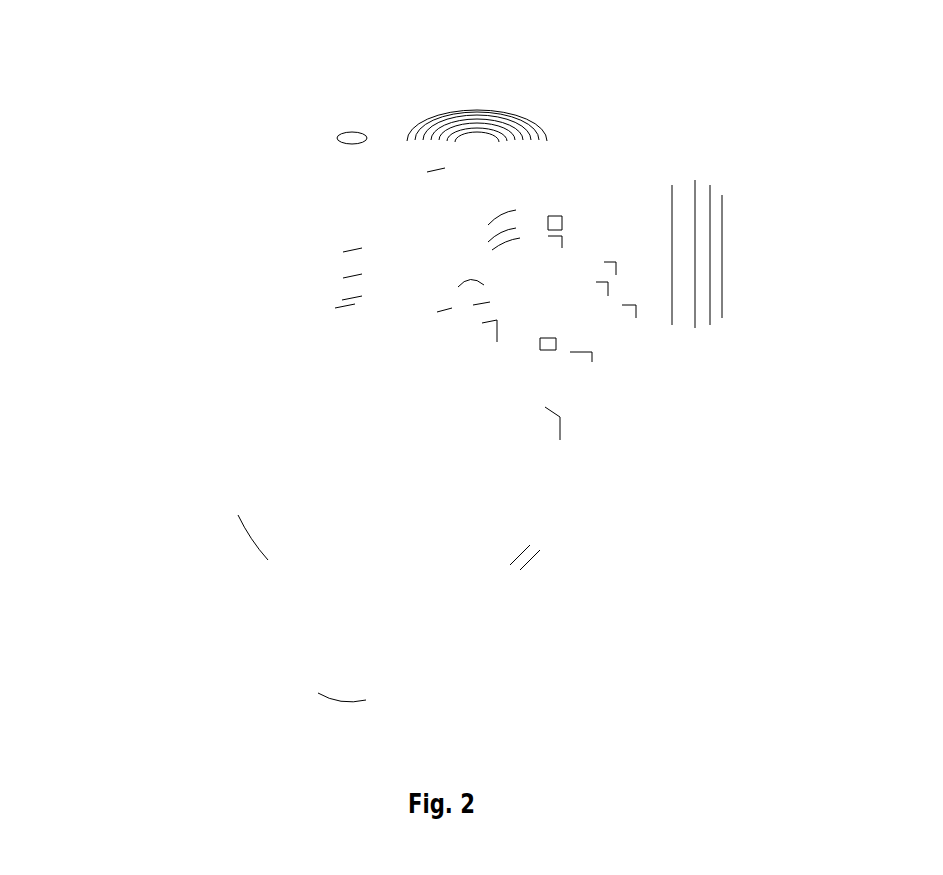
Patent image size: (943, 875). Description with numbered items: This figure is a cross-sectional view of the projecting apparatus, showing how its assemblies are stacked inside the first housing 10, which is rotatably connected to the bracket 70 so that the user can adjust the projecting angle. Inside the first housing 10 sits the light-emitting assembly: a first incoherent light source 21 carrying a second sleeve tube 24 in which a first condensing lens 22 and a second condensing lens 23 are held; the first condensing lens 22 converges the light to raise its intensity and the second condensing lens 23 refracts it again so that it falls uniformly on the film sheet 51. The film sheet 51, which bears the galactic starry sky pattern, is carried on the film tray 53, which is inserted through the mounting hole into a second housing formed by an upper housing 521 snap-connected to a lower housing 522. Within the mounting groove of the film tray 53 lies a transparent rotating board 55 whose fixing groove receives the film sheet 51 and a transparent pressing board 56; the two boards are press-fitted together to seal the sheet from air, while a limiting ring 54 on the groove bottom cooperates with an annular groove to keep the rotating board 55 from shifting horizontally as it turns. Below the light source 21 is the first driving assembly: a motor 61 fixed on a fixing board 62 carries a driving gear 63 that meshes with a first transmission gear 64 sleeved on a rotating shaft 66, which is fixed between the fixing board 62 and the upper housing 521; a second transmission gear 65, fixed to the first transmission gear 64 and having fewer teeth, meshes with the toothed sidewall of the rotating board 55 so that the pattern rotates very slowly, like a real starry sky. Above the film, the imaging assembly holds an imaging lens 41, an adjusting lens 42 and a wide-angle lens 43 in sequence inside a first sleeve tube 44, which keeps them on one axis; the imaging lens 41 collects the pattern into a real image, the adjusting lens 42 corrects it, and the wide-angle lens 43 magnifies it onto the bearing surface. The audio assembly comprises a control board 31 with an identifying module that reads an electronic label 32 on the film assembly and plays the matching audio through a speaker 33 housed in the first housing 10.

The first housing 10 is at (260, 537).
The first incoherent light source 21 is at (482, 323).
The first condensing lens 22 is at (473, 305).
The second condensing lens 23 is at (460, 285).
The second sleeve tube 24 is at (437, 312).
The control board 31 is at (335, 308).
The electronic label 32 is at (496, 246).
The speaker 33 is at (520, 558).
The imaging lens 41 is at (495, 204).
The adjusting lens 42 is at (500, 170).
The wide-angle lens 43 is at (491, 156).
The first sleeve tube 44 is at (430, 177).
The film sheet 51 is at (492, 240).
The upper housing 521 is at (343, 252).
The lower housing 522 is at (342, 300).
The film tray 53 is at (343, 278).
The limiting ring 54 is at (555, 222).
The rotating board 55 is at (492, 223).
The pressing board 56 is at (555, 240).
The motor 61 is at (548, 412).
The fixing board 62 is at (578, 357).
The driving gear 63 is at (548, 343).
The first transmission gear 64 is at (628, 310).
The second transmission gear 65 is at (608, 267).
The rotating shaft 66 is at (602, 287).
The bracket 70 is at (320, 693).